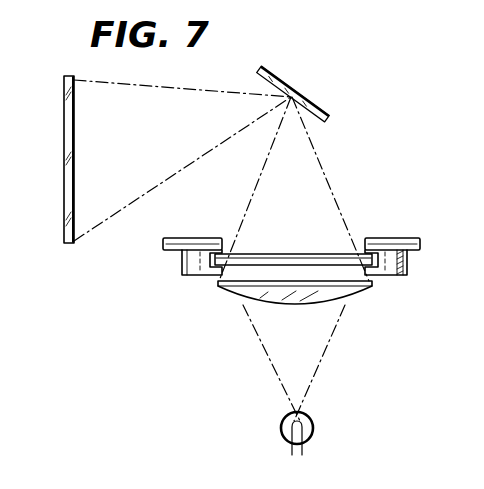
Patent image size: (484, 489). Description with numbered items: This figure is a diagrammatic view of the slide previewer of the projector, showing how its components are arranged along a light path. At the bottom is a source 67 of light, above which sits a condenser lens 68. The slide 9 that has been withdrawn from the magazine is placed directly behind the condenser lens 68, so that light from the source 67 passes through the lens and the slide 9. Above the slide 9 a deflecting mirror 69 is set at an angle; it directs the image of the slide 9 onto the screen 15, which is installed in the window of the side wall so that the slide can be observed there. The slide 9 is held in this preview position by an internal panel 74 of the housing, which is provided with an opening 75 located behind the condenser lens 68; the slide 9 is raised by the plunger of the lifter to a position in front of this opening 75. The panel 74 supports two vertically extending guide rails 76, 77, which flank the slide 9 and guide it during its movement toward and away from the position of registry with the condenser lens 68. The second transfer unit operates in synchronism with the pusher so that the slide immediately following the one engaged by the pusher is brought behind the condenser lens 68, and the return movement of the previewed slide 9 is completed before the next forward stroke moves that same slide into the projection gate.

The slide 9 is at (294, 256).
The screen 15 is at (64, 155).
The source of light 67 is at (282, 419).
The condenser lens 68 is at (299, 298).
The deflecting mirror 69 is at (318, 105).
The internal panel 74 is at (392, 238).
The opening 75 is at (193, 238).
The guide rail 76 is at (384, 276).
The guide rail 77 is at (199, 276).